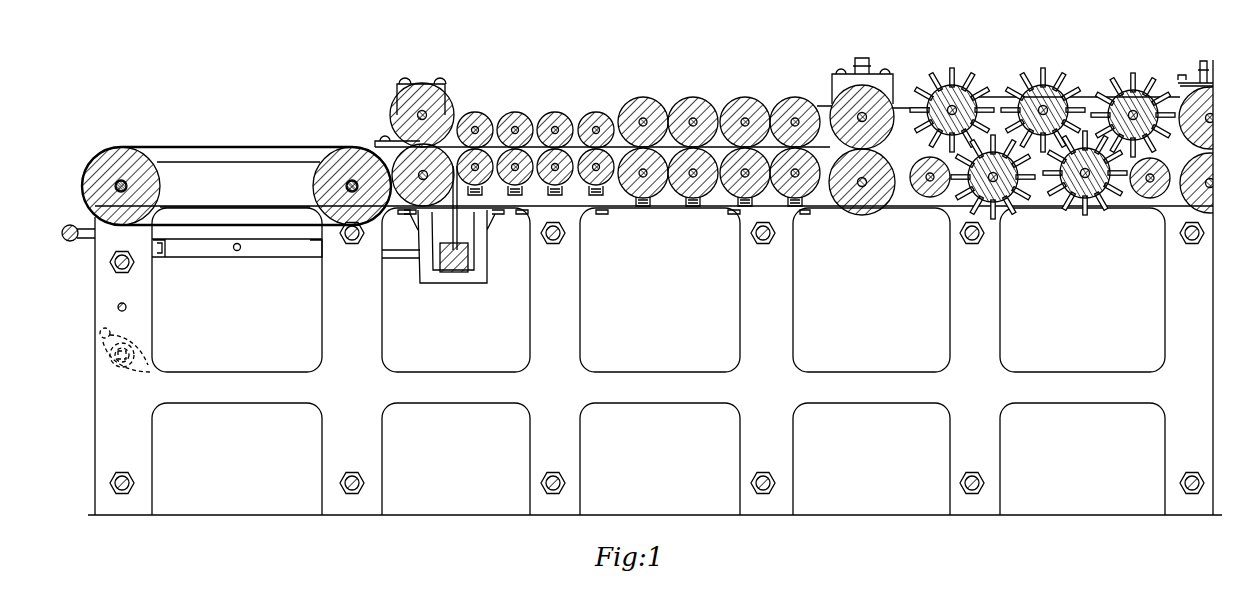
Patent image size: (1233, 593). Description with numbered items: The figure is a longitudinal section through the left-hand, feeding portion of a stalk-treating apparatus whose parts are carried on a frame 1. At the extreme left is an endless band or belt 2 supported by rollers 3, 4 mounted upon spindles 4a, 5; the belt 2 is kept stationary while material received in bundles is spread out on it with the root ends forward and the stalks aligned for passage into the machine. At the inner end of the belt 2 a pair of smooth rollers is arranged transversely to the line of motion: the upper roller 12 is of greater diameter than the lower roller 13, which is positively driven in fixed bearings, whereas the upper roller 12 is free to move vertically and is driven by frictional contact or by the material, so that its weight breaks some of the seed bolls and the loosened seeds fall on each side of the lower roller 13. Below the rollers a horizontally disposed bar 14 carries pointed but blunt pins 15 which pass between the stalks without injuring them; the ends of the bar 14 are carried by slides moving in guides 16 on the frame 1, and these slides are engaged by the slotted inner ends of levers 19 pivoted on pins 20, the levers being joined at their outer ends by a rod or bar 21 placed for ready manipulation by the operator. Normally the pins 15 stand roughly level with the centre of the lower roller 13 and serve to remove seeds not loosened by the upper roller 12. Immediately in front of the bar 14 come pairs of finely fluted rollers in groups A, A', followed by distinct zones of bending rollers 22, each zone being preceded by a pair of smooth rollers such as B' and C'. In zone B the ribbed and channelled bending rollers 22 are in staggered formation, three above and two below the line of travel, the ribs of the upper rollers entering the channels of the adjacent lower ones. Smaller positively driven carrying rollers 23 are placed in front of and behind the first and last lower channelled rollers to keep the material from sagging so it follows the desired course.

The frame 1 is at (95, 297).
The endless band or belt 2 is at (240, 132).
The roller 3 is at (153, 174).
The roller 4 is at (313, 186).
The spindle 4a is at (120, 182).
The spindle 5 is at (340, 165).
The upper smooth roller 12 is at (398, 96).
The lower smooth roller 13 is at (396, 142).
The horizontally disposed bar 14 is at (453, 273).
The pins 15 is at (460, 225).
The guides 16 is at (473, 262).
The levers 19 is at (409, 260).
The pins 20 is at (236, 251).
The rod or bar 21 is at (67, 241).
The bending rollers 22 is at (1073, 199).
The carrying rollers 23 is at (928, 197).
The group of finely fluted rollers A is at (535, 137).
The group of finely fluted rollers A' is at (719, 136).
The zone of bending rollers B is at (1039, 53).
The preceding smooth rollers B' is at (870, 121).
The preceding smooth rollers C' is at (1196, 124).